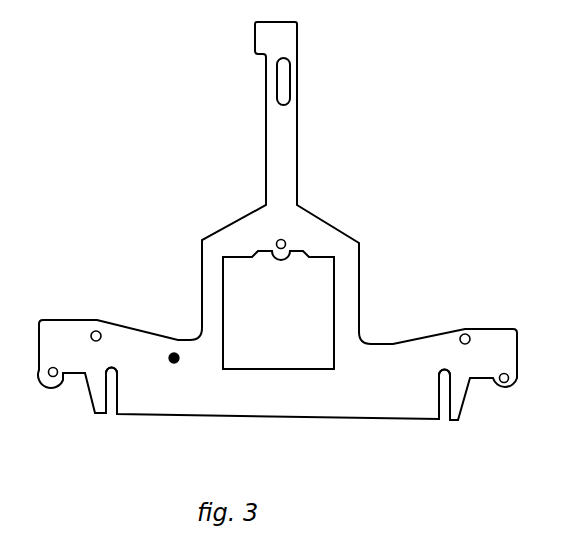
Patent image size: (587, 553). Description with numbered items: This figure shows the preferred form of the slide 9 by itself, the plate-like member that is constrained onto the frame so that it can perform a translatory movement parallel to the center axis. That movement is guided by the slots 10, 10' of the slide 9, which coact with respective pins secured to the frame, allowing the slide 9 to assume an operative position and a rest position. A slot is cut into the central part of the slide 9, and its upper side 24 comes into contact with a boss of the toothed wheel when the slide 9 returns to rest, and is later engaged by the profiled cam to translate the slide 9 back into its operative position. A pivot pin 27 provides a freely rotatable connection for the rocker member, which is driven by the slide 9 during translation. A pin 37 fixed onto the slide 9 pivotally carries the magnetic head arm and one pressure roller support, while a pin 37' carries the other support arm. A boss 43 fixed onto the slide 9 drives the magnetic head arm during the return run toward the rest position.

The slide 9 is at (315, 215).
The slot 10' is at (83, 421).
The slot 10 is at (464, 423).
The upper side of slot 24 is at (287, 258).
The pivot pin 27 is at (277, 241).
The pin 37' is at (78, 303).
The pin 37 is at (482, 296).
The boss 43 is at (172, 353).